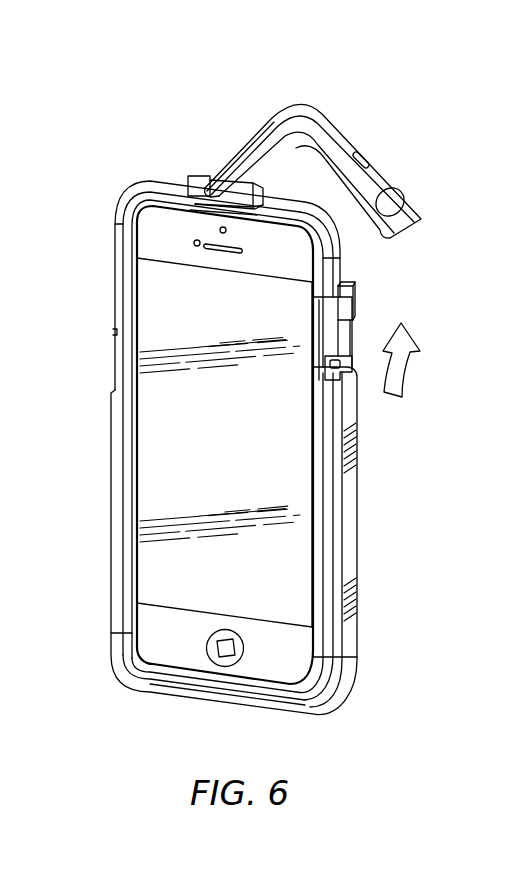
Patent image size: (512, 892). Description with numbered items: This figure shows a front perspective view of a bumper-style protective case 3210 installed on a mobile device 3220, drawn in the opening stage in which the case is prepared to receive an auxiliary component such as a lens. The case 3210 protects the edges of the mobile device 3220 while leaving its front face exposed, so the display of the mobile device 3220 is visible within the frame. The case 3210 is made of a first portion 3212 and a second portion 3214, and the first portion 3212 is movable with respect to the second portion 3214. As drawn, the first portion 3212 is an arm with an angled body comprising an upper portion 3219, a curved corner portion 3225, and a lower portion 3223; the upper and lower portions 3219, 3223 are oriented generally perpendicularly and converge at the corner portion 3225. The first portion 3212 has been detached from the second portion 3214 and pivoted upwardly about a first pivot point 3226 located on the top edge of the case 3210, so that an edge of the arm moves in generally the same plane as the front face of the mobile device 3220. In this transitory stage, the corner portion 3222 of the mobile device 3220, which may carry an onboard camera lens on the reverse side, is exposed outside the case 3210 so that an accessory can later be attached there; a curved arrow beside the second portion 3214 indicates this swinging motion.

The protective case 3210 is at (379, 625).
The first portion 3212 is at (380, 168).
The second portion 3214 is at (357, 501).
The upper portion 3219 is at (237, 153).
The mobile device 3220 is at (168, 489).
The corner portion 3222 is at (357, 260).
The lower portion 3223 is at (357, 137).
The corner portion 3225 is at (313, 149).
The first pivot point 3226 is at (190, 180).